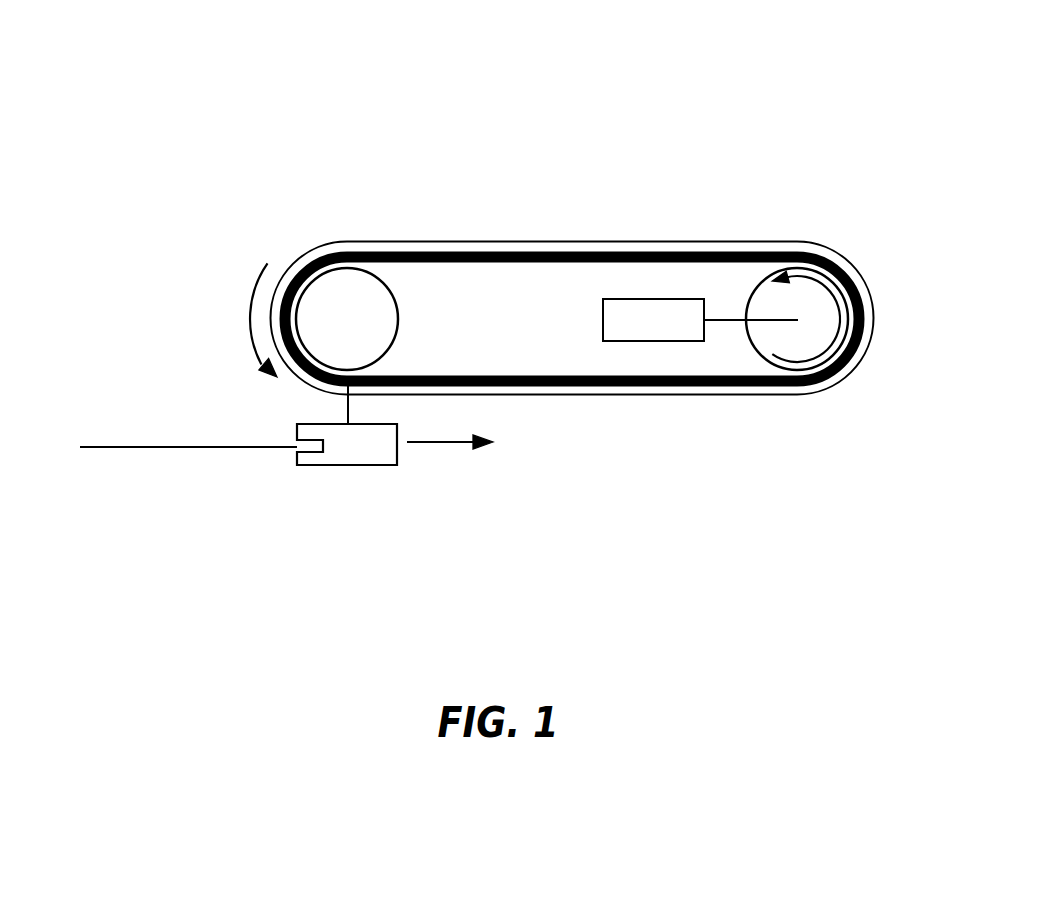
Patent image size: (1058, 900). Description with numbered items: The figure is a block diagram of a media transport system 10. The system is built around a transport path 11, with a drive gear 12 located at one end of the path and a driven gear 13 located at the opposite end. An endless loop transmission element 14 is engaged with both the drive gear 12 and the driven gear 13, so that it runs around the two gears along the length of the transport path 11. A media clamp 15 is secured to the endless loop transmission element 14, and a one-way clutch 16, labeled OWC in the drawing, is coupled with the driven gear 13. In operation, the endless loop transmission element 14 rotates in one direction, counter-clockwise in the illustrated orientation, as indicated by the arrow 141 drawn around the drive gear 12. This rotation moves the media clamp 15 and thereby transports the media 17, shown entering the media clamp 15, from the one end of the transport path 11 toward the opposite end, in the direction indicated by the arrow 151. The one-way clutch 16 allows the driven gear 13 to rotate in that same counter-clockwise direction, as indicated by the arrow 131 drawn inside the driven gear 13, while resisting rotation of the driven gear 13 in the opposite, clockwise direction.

The media transport system 10 is at (842, 69).
The transport path 11 is at (405, 242).
The drive gear 12 is at (317, 253).
The driven gear 13 is at (818, 273).
The arrow 131 is at (833, 303).
The endless loop transmission element 14 is at (568, 253).
The arrow 141 is at (250, 325).
The media clamp 15 is at (358, 448).
The arrow 151 is at (443, 443).
The one-way clutch 16 is at (660, 332).
The media 17 is at (173, 447).